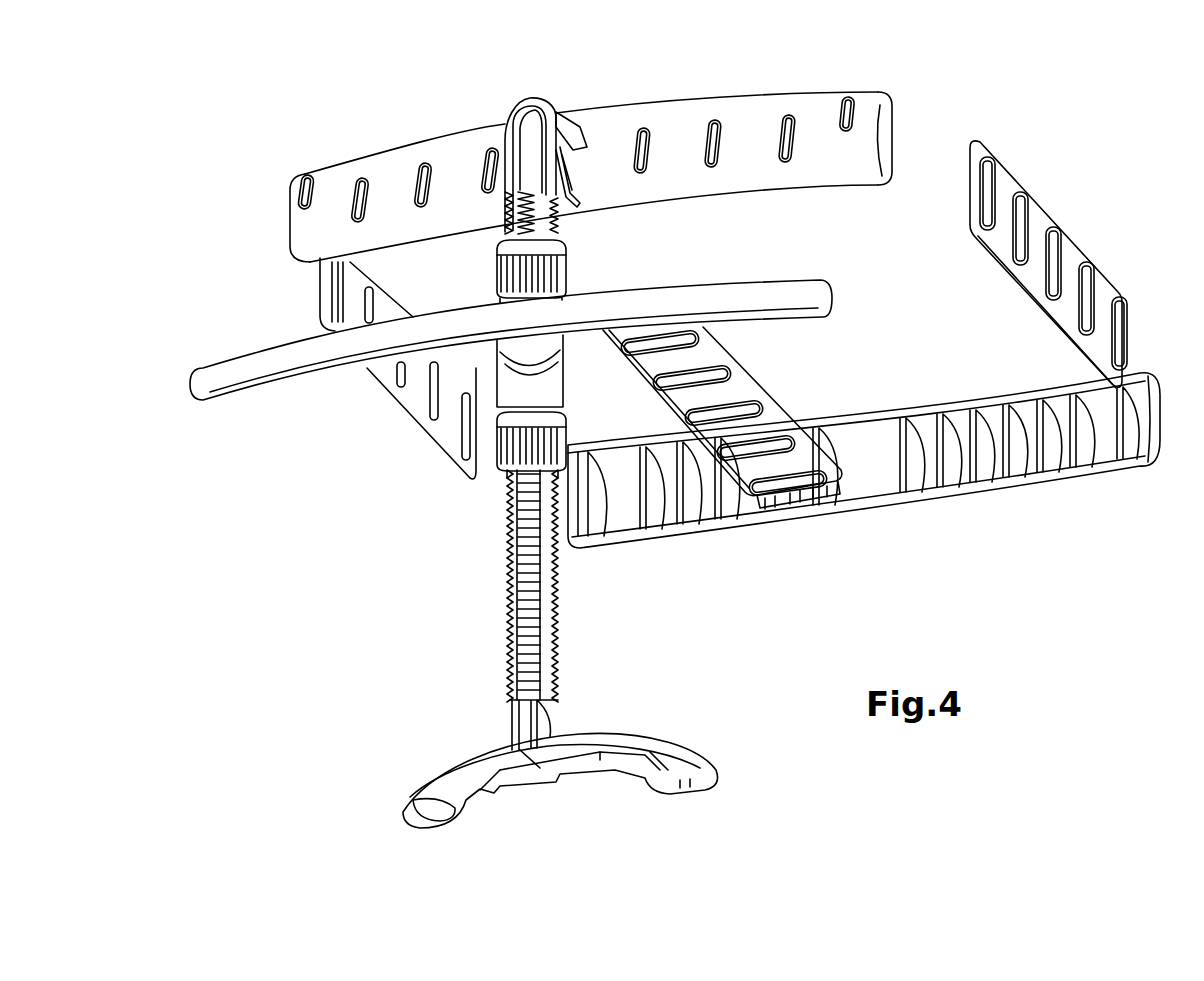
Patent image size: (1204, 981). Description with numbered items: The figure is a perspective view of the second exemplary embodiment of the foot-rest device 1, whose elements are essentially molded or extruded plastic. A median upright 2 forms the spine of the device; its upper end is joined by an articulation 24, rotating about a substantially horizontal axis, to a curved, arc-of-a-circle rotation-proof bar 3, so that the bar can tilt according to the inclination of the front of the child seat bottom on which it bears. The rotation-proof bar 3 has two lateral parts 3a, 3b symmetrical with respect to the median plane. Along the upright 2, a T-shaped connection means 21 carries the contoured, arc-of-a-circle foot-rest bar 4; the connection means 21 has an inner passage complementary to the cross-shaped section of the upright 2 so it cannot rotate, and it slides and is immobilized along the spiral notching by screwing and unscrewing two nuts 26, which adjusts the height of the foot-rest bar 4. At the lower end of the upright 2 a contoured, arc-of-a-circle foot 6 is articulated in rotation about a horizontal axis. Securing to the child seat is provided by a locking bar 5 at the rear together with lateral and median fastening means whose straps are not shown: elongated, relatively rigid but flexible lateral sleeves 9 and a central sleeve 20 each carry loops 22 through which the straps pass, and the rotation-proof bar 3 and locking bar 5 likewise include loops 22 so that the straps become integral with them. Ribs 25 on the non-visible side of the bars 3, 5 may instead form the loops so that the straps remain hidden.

The foot-rest device 1 is at (397, 624).
The median upright 2 is at (518, 93).
The rotation-proof bar 3 is at (767, 71).
The lateral part of the rotation-proof bar 3a is at (290, 210).
The lateral part of the rotation-proof bar 3b is at (885, 118).
The foot-rest bar 4 is at (805, 266).
The locking bar 5 is at (956, 522).
The foot 6 is at (626, 727).
The lateral sleeve 9 is at (298, 292).
The central sleeve 20 is at (645, 395).
The T-shaped connection means 21 is at (578, 358).
The loop 22 is at (704, 146).
The articulation 24 is at (577, 206).
The rib 25 is at (902, 443).
The nut 26 is at (497, 290).